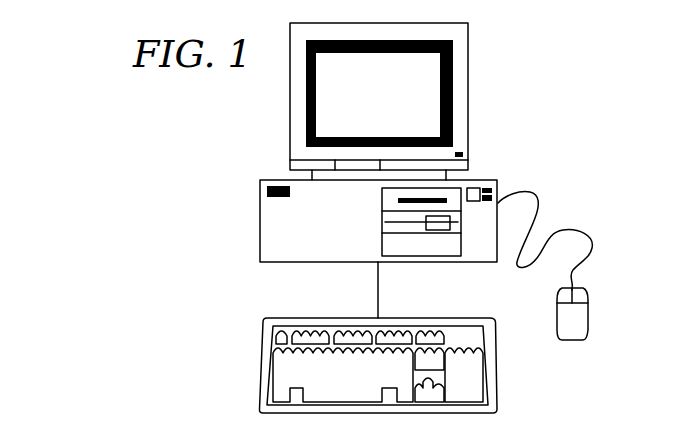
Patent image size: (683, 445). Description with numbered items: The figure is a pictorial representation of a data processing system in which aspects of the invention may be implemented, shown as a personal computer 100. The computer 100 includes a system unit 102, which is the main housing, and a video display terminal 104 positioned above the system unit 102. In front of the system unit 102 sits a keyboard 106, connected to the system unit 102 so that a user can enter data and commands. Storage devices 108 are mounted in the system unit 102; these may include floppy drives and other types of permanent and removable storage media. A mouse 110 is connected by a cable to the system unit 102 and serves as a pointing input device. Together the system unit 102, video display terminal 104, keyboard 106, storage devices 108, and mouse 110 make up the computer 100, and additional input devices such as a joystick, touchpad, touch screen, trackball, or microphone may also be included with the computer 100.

The computer 100 is at (566, 141).
The system unit 102 is at (474, 262).
The video display terminal 104 is at (468, 73).
The keyboard 106 is at (259, 365).
The storage devices 108 is at (382, 218).
The mouse 110 is at (588, 303).